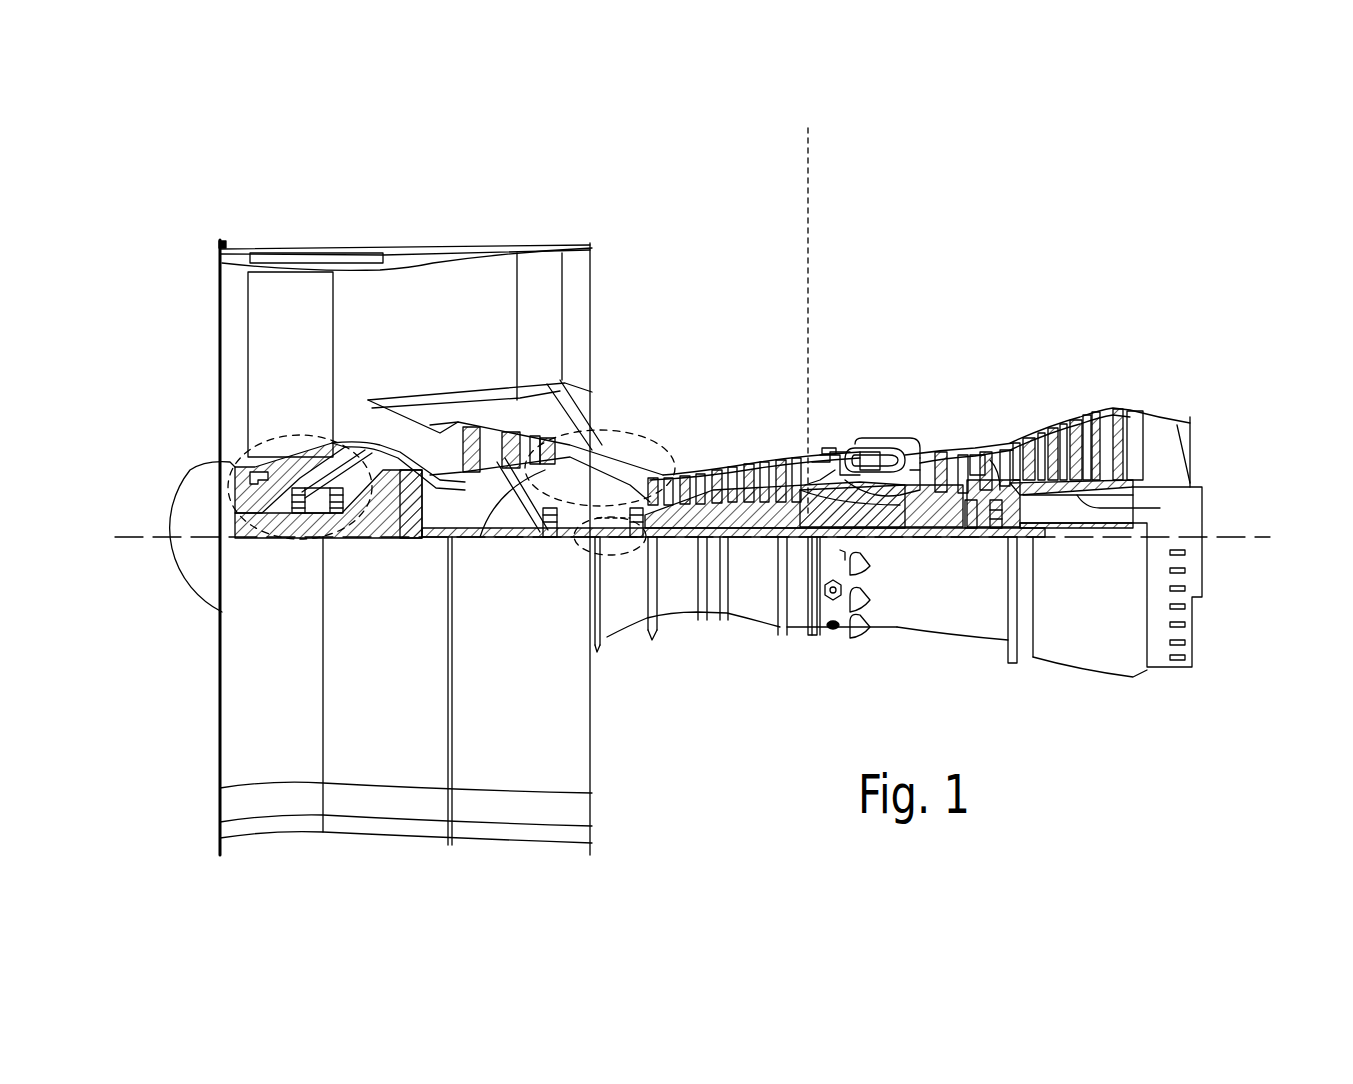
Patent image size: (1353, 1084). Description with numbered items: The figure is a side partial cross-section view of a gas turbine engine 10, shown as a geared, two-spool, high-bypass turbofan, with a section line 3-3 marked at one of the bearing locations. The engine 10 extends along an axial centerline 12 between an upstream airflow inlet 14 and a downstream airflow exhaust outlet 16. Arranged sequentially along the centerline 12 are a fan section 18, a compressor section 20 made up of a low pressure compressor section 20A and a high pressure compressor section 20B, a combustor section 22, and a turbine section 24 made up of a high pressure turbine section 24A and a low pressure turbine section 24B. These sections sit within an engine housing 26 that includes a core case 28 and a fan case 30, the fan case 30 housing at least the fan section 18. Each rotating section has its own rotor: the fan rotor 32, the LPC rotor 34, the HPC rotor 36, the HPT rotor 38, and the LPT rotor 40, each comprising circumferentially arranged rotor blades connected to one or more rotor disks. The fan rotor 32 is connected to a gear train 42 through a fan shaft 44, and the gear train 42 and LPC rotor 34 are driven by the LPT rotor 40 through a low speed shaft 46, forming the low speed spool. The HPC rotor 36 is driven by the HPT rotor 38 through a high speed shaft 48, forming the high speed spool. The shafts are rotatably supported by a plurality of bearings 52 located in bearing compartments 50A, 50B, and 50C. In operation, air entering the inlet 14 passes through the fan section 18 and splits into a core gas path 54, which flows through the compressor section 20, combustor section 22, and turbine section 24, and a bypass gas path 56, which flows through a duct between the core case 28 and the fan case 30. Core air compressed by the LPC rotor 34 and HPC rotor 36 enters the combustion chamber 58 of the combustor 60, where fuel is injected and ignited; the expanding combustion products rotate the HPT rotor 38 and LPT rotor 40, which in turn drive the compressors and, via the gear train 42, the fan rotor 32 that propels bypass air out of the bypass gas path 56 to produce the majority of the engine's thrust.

The engine 10 is at (1135, 210).
The axial centerline 12 is at (1248, 537).
The upstream airflow inlet 14 is at (218, 340).
The downstream airflow exhaust outlet 16 is at (1195, 447).
The fan section 18 is at (388, 218).
The compressor section 20 is at (807, 160).
The low pressure compressor section 20A is at (575, 375).
The high pressure compressor section 20B is at (805, 345).
The combustor section 22 is at (905, 345).
The turbine section 24 is at (1140, 265).
The high pressure turbine section 24A is at (1000, 345).
The low pressure turbine section 24B is at (1140, 345).
The engine housing 26 is at (607, 645).
The core case 28 is at (800, 632).
The fan case 30 is at (520, 842).
The fan rotor 32 is at (228, 460).
The LPC rotor 34 is at (480, 548).
The HPC rotor 36 is at (750, 500).
The HPT rotor 38 is at (975, 530).
The LPT rotor 40 is at (1104, 509).
The gear train 42 is at (410, 540).
The fan shaft 44 is at (284, 540).
The low speed shaft 46 is at (1084, 538).
The high speed shaft 48 is at (897, 540).
The bearing compartment 50A is at (273, 443).
The bearing compartment 50B is at (595, 455).
The bearing compartment 50C is at (985, 455).
The bearings 52 is at (322, 547).
The core gas path 54 is at (385, 422).
The bypass gas path 56 is at (404, 311).
The combustion chamber 58 is at (882, 478).
The combustor 60 is at (890, 440).
The section line 3-3 is at (577, 545).